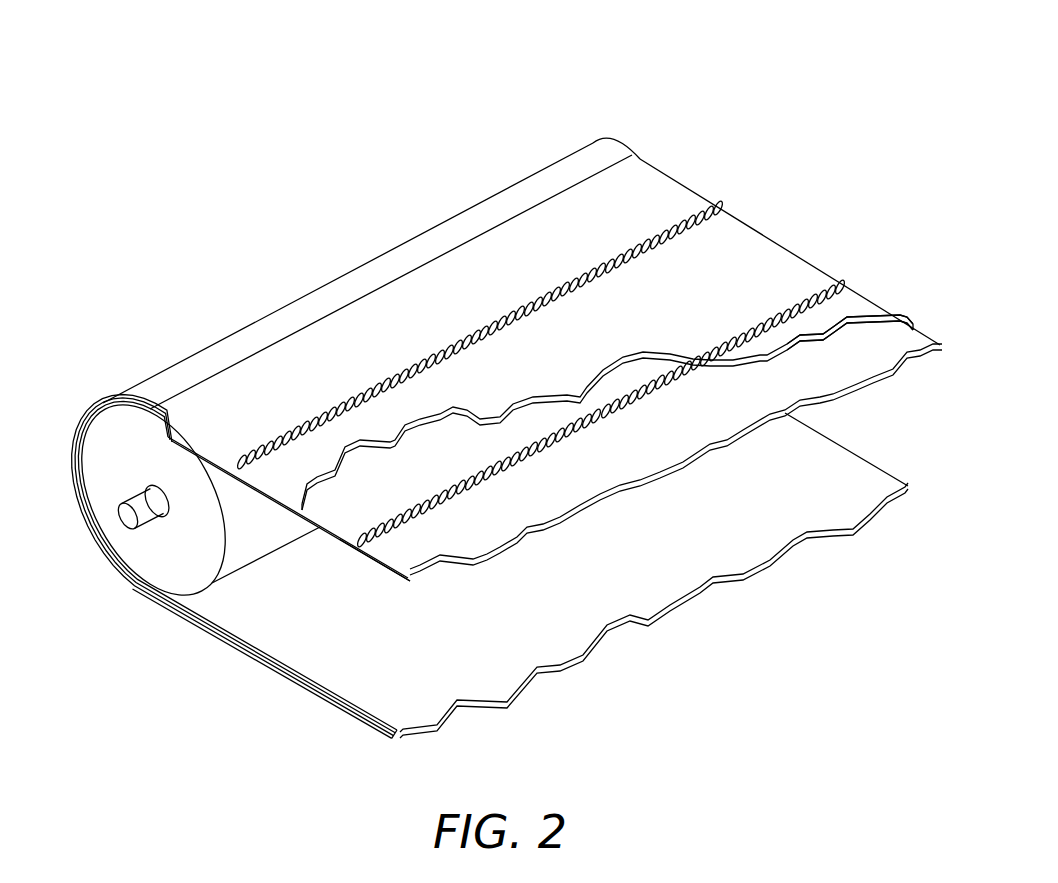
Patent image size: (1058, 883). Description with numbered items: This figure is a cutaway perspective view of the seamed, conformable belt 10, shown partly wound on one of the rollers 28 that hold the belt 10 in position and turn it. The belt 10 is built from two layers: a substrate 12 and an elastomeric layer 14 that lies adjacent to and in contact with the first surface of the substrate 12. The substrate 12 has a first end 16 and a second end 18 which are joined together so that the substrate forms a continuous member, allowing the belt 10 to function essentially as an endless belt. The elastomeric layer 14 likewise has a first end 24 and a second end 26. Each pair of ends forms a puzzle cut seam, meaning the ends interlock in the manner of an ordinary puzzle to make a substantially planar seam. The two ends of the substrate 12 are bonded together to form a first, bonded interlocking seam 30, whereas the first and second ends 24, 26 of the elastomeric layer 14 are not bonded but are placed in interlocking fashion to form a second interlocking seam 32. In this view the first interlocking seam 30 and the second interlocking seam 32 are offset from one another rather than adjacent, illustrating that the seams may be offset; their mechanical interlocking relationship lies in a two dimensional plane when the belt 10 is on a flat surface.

The belt 10 is at (448, 125).
The substrate 12 is at (890, 344).
The elastomeric layer 14 is at (778, 262).
The first end 16 is at (350, 537).
The second end 18 is at (380, 545).
The first end 24 is at (692, 211).
The second end 26 is at (720, 230).
The rollers 28 is at (110, 430).
The first interlocking seam 30 is at (360, 547).
The second interlocking seam 32 is at (719, 204).